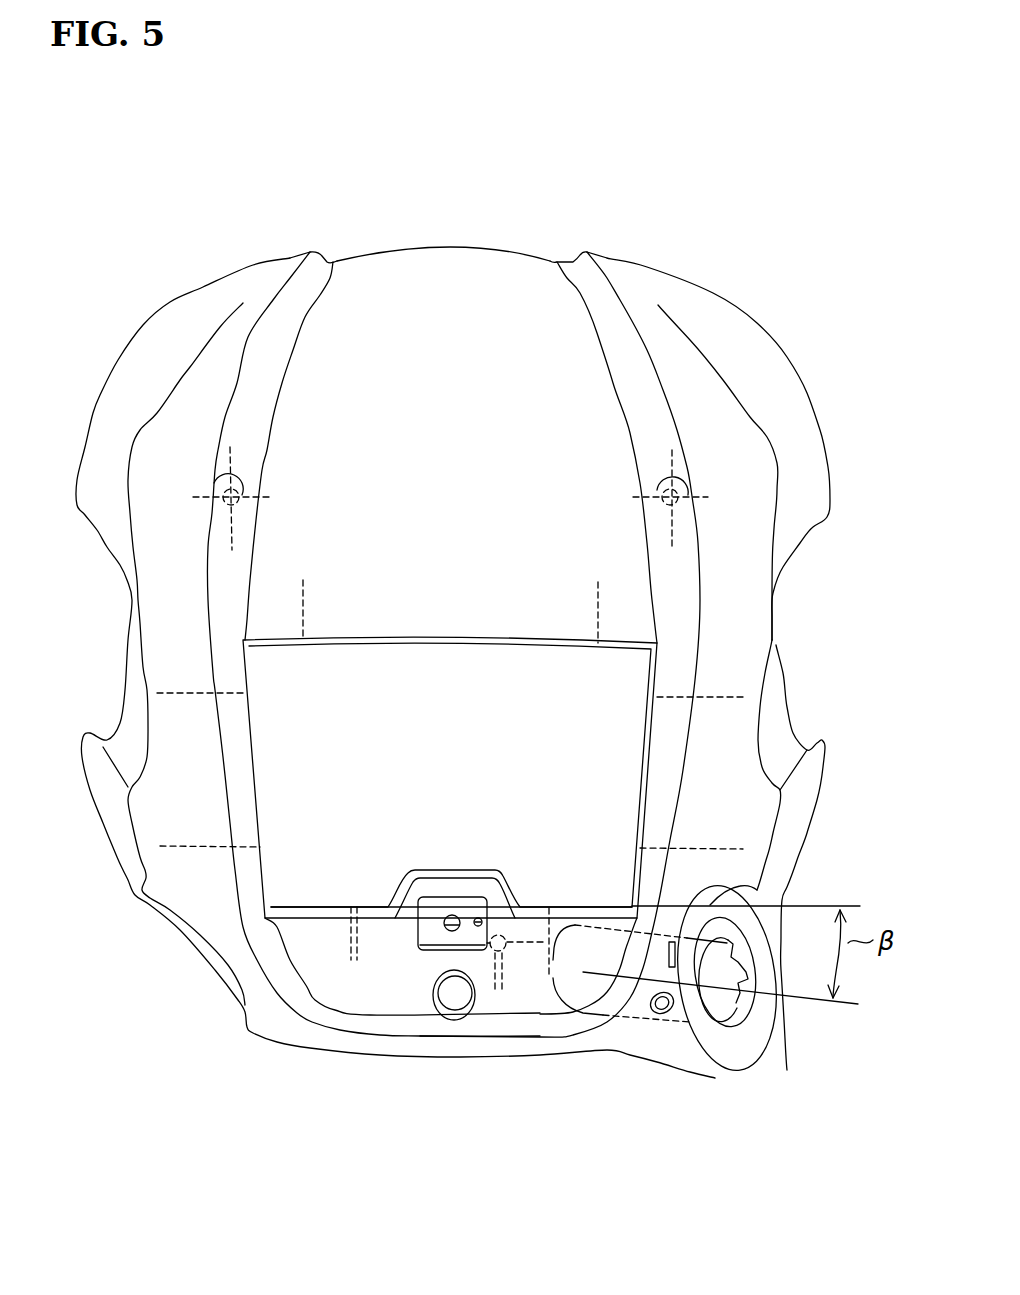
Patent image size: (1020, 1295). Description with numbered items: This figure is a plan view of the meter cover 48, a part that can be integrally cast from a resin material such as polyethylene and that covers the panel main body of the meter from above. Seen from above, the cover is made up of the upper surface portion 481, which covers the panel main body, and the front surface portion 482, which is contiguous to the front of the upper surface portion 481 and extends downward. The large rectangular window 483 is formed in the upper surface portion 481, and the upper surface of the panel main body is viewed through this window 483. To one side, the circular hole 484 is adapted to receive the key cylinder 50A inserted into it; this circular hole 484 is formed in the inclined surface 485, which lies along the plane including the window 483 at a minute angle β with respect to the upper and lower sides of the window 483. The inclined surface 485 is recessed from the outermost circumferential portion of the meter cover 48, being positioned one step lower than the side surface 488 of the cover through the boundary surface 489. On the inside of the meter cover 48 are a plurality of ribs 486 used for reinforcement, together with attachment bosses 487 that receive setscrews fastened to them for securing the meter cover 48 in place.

The meter cover 48 is at (713, 270).
The key cylinder 50A is at (625, 1022).
The upper surface portion 481 is at (718, 747).
The front surface portion 482 is at (467, 267).
The window 483 is at (333, 833).
The circular hole 484 is at (720, 1008).
The inclined surface 485 is at (712, 1040).
The ribs 486 is at (187, 693).
The attachment bosses 487 is at (215, 482).
The side surface 488 is at (778, 862).
The boundary surface 489 is at (757, 900).